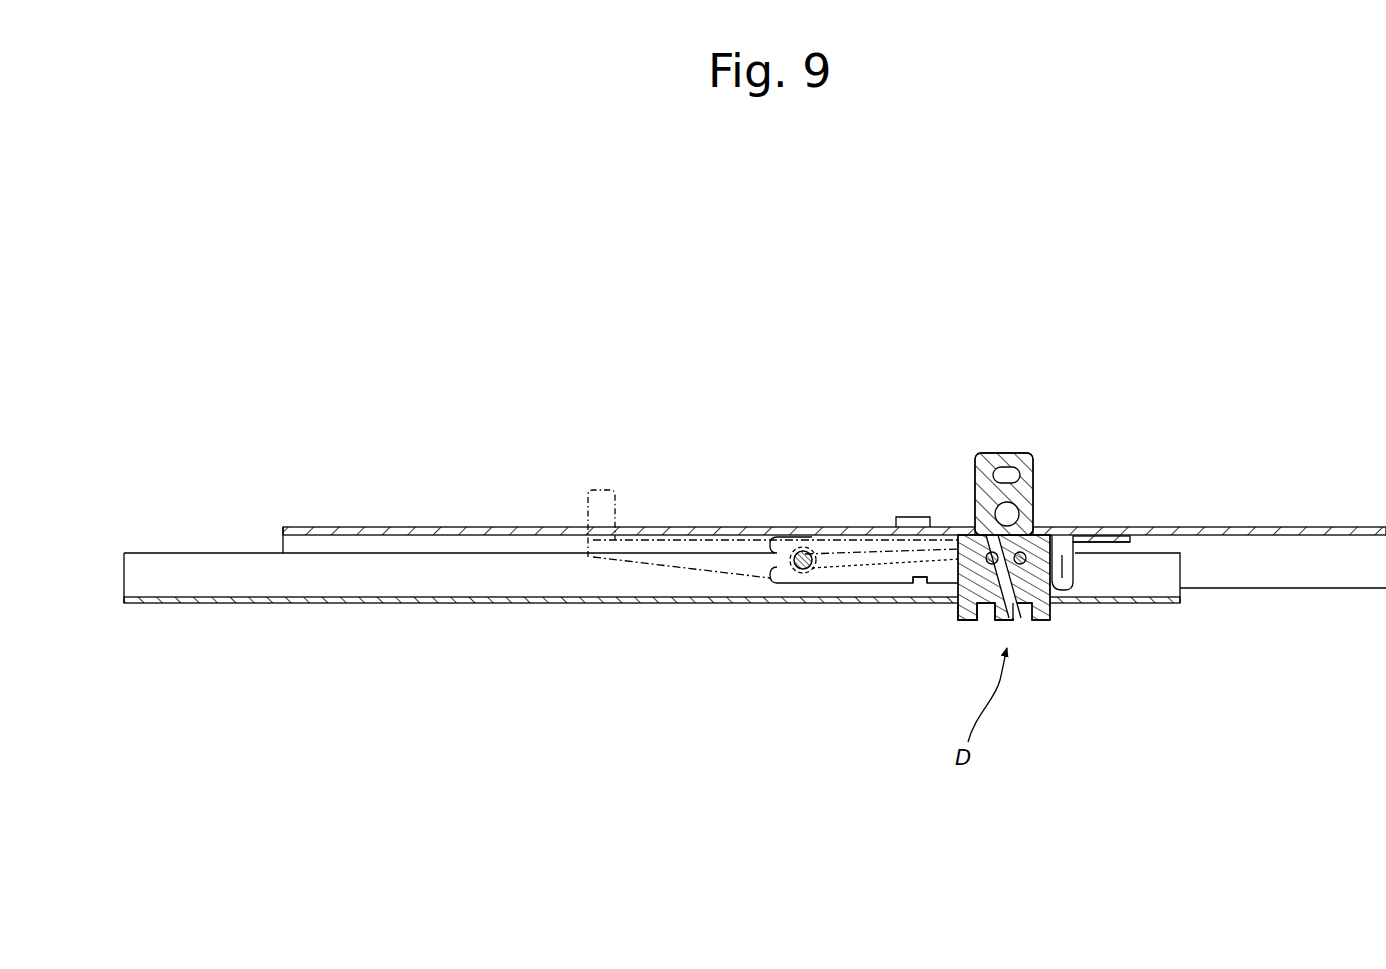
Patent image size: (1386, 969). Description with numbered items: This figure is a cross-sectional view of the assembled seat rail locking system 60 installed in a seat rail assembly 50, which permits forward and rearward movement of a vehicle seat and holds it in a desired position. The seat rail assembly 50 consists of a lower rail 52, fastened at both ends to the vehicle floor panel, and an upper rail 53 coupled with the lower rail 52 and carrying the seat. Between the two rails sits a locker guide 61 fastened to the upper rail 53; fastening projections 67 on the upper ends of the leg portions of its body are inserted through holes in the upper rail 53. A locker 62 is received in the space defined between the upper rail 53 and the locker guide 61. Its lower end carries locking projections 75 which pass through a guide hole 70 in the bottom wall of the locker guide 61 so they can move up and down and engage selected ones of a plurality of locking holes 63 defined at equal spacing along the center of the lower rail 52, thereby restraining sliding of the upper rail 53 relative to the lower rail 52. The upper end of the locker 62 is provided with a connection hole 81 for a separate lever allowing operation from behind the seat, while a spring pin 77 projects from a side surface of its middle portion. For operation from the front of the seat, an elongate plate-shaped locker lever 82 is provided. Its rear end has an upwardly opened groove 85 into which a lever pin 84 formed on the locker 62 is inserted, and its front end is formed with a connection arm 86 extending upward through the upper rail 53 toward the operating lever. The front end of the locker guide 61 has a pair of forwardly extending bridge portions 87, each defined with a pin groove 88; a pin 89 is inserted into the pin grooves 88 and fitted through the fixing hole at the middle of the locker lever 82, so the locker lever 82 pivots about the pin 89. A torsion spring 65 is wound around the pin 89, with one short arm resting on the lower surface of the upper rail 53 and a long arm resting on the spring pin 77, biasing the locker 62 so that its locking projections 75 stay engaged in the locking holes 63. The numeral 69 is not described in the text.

The seat rail assembly 50 is at (489, 518).
The lower rail 52 is at (350, 604).
The upper rail 53 is at (420, 527).
The seat rail locking system 60 is at (768, 384).
The locker guide 61 is at (1075, 590).
The locker 62 is at (1035, 490).
The locking holes 63 is at (482, 604).
The torsion spring 65 is at (858, 560).
The fastening projections 67 is at (913, 517).
The notch 69 is at (917, 584).
The guide hole 70 is at (958, 602).
The locking projections 75 is at (968, 613).
The spring pin 77 is at (1027, 556).
The connection hole 81 is at (1005, 463).
The locker lever 82 is at (722, 558).
The lever pin 84 is at (986, 460).
The groove 85 is at (990, 618).
The connection arm 86 is at (601, 493).
The bridge portions 87 is at (835, 584).
The pin grooves 88 is at (775, 563).
The pin 89 is at (801, 574).